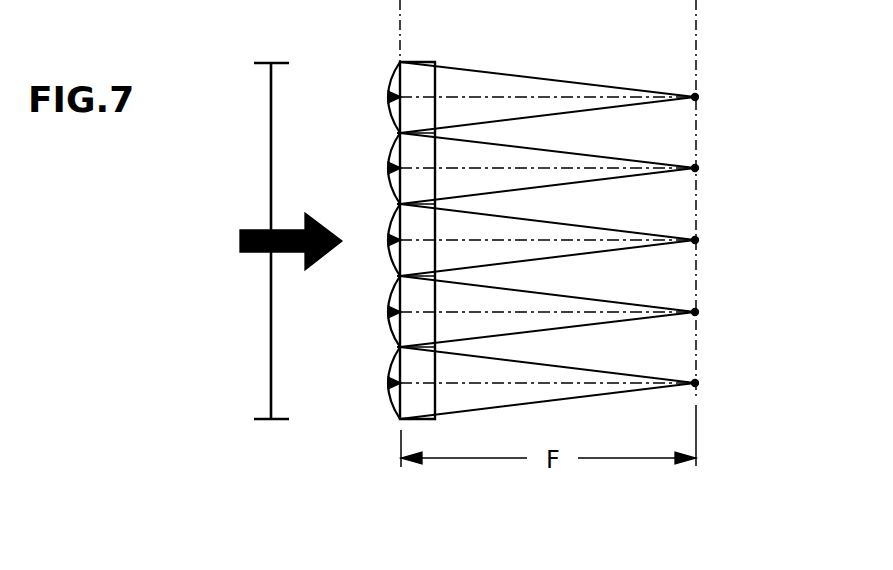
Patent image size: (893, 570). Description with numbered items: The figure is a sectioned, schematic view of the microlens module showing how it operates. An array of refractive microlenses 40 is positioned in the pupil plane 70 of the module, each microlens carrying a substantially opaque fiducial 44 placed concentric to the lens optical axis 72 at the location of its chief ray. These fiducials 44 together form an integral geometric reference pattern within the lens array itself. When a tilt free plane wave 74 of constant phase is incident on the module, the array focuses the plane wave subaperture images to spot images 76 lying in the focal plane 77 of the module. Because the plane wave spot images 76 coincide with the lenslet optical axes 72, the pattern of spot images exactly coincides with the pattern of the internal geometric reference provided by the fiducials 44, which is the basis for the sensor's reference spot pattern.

The pupil plane 70 is at (415, 0).
The MLM focal plane 77 is at (708, 0).
The optical axes 72 is at (578, 96).
The spot images 76 is at (722, 402).
The tilt free plane wave 74 is at (271, 146).
The microlenses 40 is at (400, 347).
The fiducials 44 is at (390, 383).